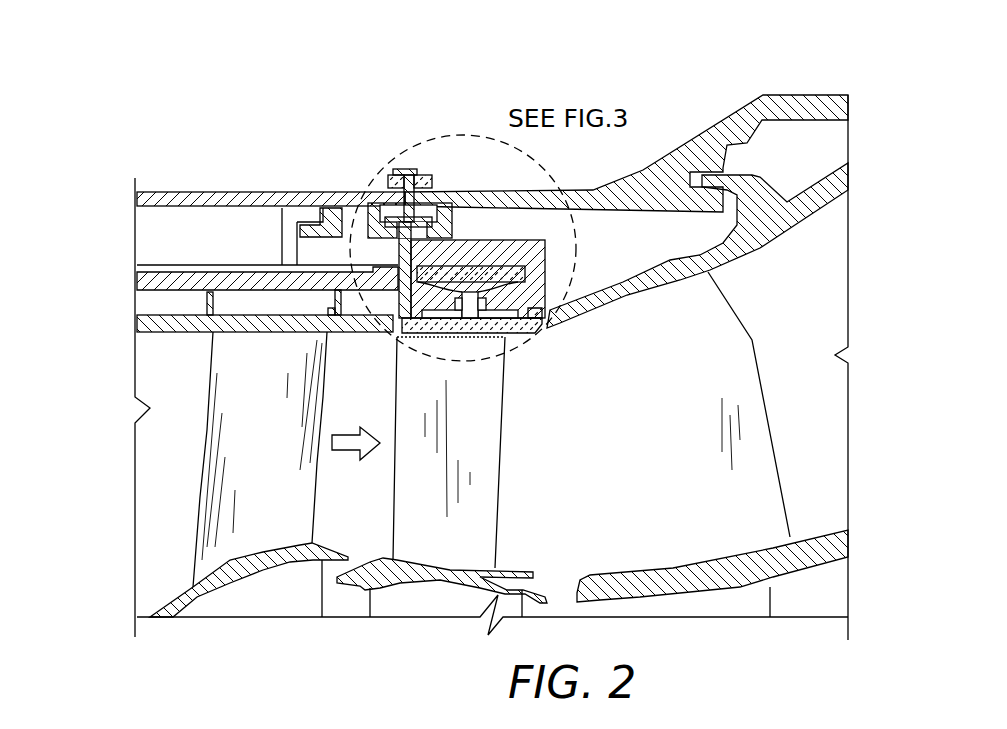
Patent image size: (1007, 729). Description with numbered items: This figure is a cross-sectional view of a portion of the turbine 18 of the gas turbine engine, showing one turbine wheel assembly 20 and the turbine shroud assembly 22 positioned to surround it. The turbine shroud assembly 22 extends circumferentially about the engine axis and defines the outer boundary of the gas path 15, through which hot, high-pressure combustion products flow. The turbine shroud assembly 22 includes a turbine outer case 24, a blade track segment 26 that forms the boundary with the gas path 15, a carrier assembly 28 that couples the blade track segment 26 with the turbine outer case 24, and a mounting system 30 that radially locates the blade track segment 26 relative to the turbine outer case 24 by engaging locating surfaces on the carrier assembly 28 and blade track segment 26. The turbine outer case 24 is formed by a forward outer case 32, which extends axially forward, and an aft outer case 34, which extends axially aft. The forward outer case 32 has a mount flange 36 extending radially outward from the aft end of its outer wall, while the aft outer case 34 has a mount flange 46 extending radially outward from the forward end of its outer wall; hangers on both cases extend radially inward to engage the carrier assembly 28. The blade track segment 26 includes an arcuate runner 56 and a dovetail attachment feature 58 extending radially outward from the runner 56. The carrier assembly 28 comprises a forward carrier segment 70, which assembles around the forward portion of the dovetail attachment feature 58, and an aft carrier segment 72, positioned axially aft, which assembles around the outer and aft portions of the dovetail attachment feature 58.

The gas path 15 is at (347, 450).
The turbine 18 is at (160, 128).
The turbine wheel assembly 20 is at (575, 551).
The turbine shroud assembly 22 is at (485, 100).
The turbine outer case 24 is at (350, 152).
The blade track segment 26 is at (520, 347).
The carrier assembly 28 is at (533, 227).
The mounting system 30 is at (400, 100).
The forward outer case 32 is at (318, 191).
The aft outer case 34 is at (498, 191).
The mount flange 36 is at (394, 176).
The mount flange 46 is at (420, 170).
The runner 56 is at (530, 325).
The dovetail attachment feature 58 is at (525, 268).
The forward carrier segment 70 is at (398, 259).
The aft carrier segment 72 is at (515, 248).